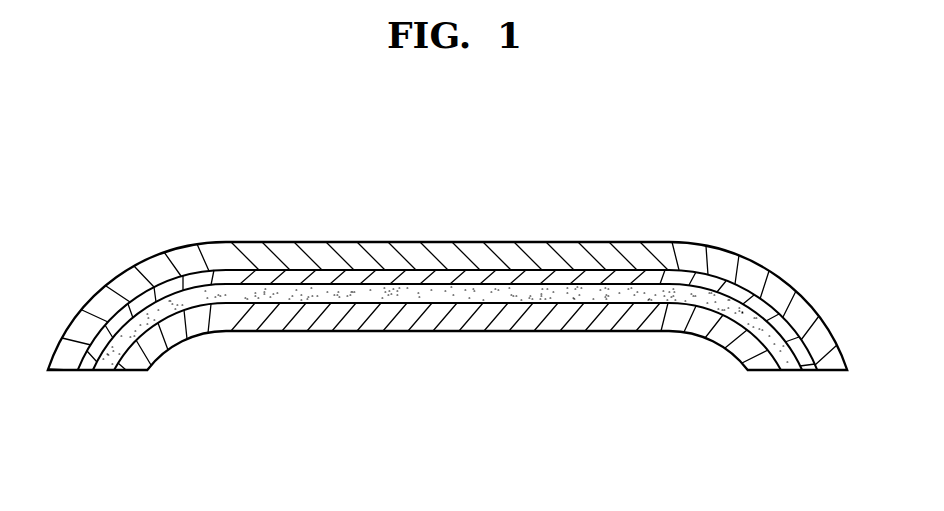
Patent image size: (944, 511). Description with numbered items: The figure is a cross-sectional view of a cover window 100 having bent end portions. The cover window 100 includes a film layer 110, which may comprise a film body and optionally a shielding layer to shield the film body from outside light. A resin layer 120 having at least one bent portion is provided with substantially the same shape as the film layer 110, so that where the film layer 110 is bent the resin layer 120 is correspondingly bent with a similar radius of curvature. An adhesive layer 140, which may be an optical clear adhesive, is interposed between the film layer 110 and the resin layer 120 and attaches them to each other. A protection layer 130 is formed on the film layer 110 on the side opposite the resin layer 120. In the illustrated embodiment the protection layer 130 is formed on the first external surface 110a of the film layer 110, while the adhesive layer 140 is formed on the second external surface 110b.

The cover window 100 is at (382, 200).
The film layer 110 is at (616, 277).
The first external surface 110a is at (448, 270).
The second external surface 110b is at (447, 284).
The resin layer 120 is at (583, 322).
The protection layer 130 is at (543, 257).
The adhesive layer 140 is at (702, 293).